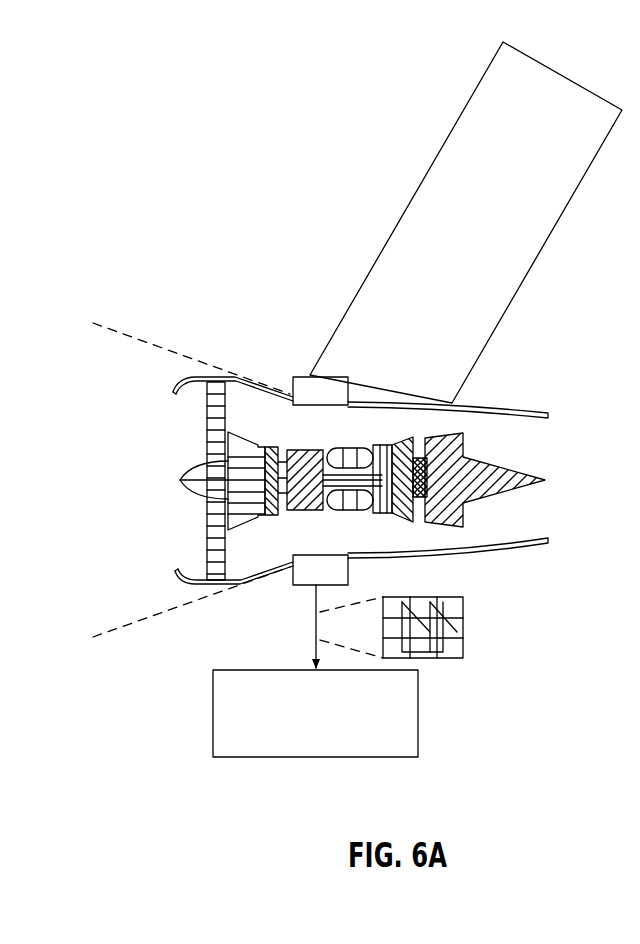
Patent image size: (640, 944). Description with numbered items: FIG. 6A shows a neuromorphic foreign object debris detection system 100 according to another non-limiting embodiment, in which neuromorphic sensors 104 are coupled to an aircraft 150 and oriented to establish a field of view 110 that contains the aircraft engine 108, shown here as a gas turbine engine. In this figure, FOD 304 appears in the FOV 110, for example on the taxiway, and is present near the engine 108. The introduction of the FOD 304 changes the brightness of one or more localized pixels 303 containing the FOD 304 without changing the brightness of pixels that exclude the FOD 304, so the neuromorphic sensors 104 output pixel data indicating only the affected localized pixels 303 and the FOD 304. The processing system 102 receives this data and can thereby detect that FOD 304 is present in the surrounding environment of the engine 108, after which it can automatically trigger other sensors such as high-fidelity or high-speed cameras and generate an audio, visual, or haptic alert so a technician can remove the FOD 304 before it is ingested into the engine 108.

The neuromorphic foreign object debris detection system 100 is at (200, 115).
The aircraft 150 is at (262, 255).
The aircraft engine 108 is at (513, 406).
The field of view 110 is at (147, 333).
The neuromorphic sensor 104 is at (308, 378).
The processing system 102 is at (280, 669).
The localized pixels 303 is at (442, 665).
The FOD 304 is at (433, 632).